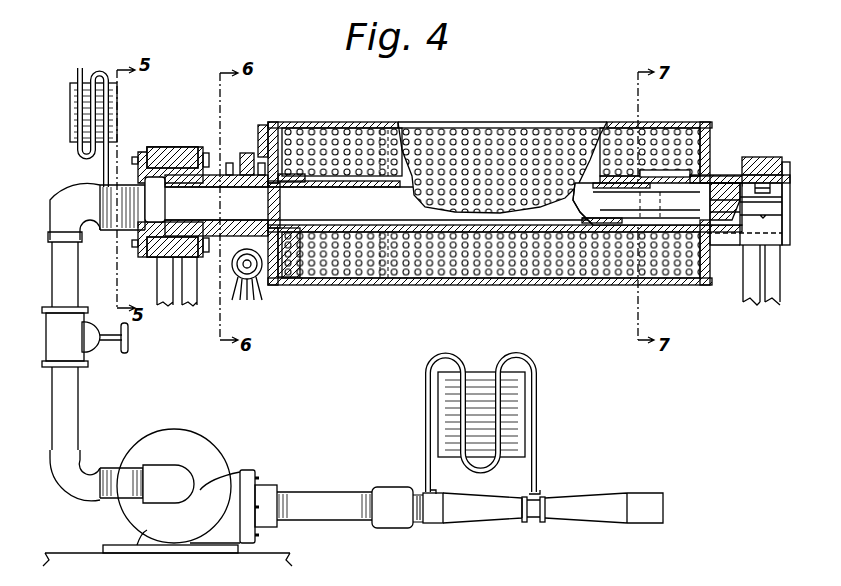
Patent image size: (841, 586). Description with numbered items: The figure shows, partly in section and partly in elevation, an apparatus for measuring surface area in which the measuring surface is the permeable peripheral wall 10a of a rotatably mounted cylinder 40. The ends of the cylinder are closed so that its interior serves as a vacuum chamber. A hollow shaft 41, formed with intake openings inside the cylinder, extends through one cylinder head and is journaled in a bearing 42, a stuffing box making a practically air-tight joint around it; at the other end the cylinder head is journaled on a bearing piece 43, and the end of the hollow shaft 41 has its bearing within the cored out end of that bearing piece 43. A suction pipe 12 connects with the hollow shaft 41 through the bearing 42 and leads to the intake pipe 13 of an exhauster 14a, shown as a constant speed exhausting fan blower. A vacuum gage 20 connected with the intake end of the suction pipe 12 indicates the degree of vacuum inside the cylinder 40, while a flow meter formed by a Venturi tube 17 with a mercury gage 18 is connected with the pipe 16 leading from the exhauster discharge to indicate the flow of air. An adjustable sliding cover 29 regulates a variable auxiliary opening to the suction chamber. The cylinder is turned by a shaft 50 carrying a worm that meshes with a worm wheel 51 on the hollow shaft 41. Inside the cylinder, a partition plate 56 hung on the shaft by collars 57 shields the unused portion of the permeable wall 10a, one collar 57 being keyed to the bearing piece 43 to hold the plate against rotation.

The peripheral wall 10a is at (673, 123).
The suction pipe 12 is at (53, 263).
The intake pipe 13 is at (52, 350).
The exhauster 14a is at (188, 450).
The pipe 16 is at (348, 525).
The Venturi tube 17 is at (460, 512).
The mercury gage 18 is at (460, 362).
The vacuum gage 20 is at (78, 106).
The adjustable sliding cover 29 is at (264, 125).
The cylinder 40 is at (710, 123).
The hollow shaft 41 is at (290, 250).
The bearing 42 is at (172, 148).
The bearing piece 43 is at (718, 176).
The shaft 50 is at (233, 278).
The worm wheel 51 is at (247, 152).
The partition plate 56 is at (470, 232).
The collars 57 is at (295, 176).